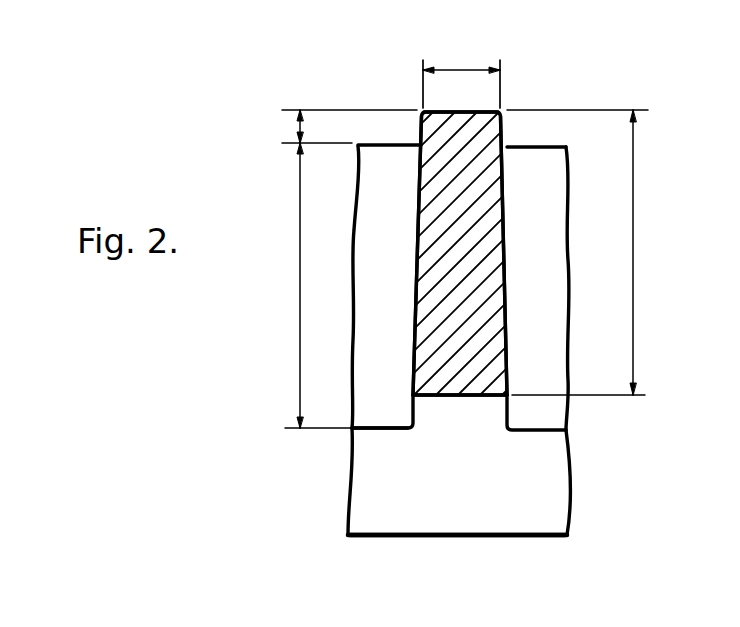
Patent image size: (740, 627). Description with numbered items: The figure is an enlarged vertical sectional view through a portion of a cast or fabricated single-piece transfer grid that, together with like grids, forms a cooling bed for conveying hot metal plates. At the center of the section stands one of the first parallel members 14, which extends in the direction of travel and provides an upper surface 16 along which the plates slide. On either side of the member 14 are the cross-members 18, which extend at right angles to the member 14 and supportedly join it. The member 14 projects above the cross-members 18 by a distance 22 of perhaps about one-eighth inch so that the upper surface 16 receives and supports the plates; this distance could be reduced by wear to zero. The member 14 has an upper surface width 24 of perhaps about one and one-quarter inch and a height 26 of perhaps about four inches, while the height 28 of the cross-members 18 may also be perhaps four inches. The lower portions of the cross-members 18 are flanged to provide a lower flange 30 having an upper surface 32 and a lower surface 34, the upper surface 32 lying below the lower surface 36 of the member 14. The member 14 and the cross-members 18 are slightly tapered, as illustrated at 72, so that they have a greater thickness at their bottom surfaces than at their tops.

The first parallel members 14 is at (482, 206).
The upper surfaces 16 is at (470, 109).
The cross-members 18 is at (554, 412).
The projection distance 22 is at (297, 125).
The upper surface width 24 is at (460, 70).
The height of members 26 is at (636, 255).
The height of cross-members 28 is at (299, 290).
The lower flanges 30 is at (362, 472).
The upper surface of lower flange 32 is at (384, 428).
The lower surface of lower flange 34 is at (468, 538).
The lower surface of members 36 is at (457, 396).
The taper 72 is at (419, 239).